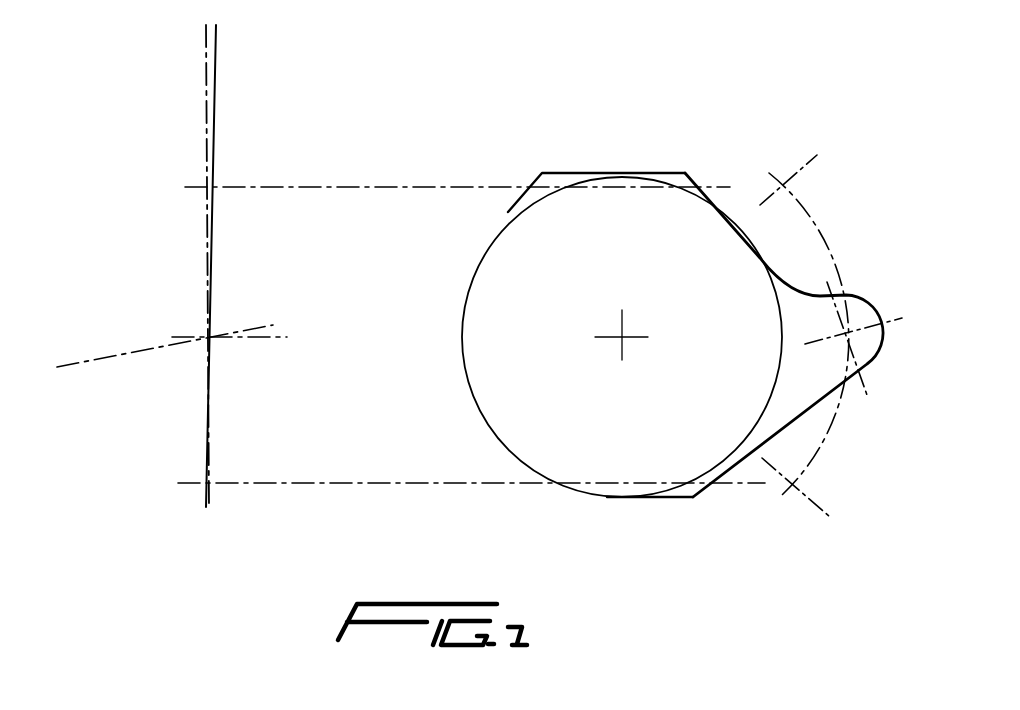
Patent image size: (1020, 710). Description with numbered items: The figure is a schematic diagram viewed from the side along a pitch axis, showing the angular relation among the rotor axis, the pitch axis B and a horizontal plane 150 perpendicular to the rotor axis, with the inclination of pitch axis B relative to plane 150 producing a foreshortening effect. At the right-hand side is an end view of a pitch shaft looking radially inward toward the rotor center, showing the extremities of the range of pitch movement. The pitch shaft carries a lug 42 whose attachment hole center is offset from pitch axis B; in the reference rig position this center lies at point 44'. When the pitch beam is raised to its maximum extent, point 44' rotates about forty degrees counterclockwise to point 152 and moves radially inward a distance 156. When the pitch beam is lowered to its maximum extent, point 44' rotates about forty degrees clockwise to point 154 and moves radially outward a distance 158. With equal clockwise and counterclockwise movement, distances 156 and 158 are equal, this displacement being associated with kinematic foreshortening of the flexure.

The lug 42 is at (805, 393).
The rig position of attachment hole center 44' is at (513, 334).
The horizontal plane 150 is at (95, 362).
The point 152 is at (207, 188).
The point 154 is at (207, 485).
The distance 156 is at (165, 283).
The distance 158 is at (162, 410).
The pitch axis B is at (622, 337).